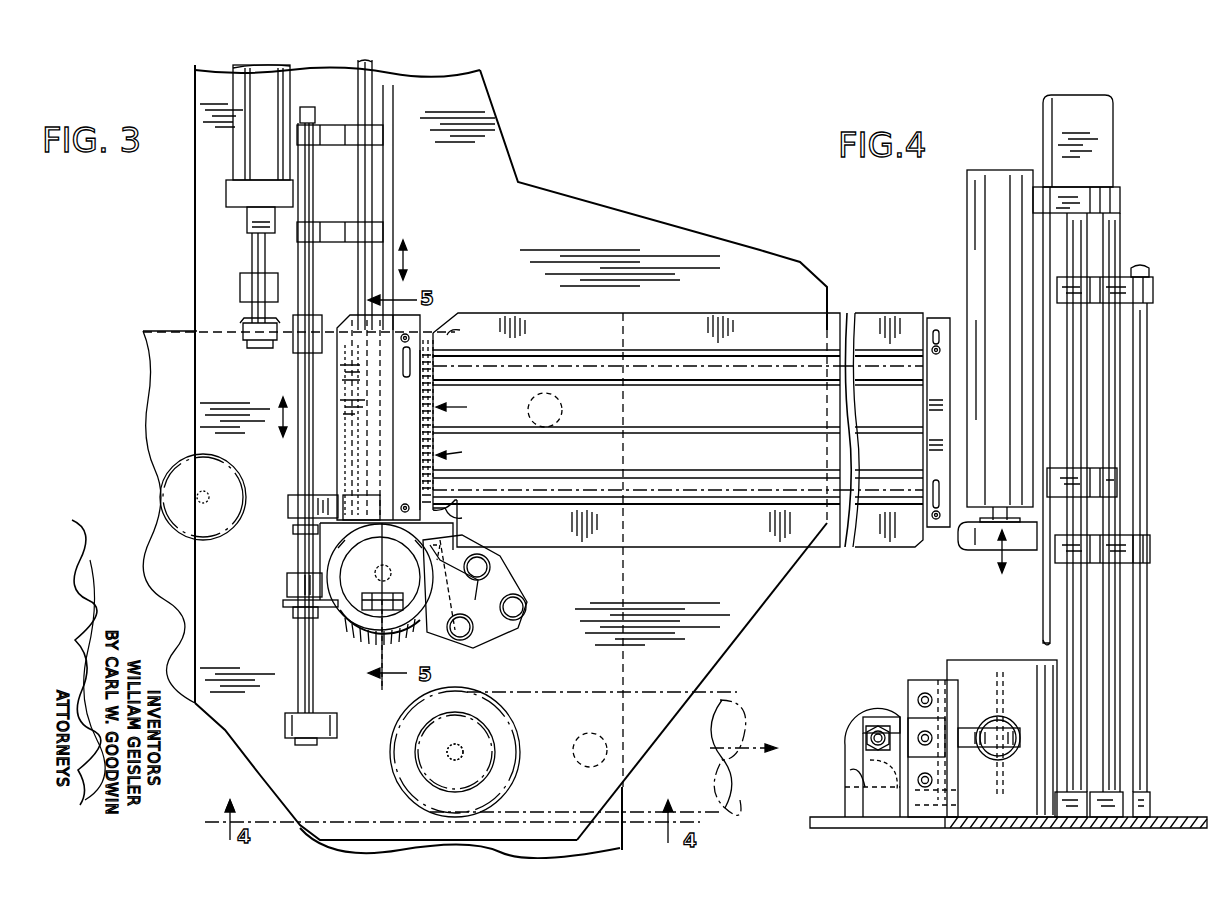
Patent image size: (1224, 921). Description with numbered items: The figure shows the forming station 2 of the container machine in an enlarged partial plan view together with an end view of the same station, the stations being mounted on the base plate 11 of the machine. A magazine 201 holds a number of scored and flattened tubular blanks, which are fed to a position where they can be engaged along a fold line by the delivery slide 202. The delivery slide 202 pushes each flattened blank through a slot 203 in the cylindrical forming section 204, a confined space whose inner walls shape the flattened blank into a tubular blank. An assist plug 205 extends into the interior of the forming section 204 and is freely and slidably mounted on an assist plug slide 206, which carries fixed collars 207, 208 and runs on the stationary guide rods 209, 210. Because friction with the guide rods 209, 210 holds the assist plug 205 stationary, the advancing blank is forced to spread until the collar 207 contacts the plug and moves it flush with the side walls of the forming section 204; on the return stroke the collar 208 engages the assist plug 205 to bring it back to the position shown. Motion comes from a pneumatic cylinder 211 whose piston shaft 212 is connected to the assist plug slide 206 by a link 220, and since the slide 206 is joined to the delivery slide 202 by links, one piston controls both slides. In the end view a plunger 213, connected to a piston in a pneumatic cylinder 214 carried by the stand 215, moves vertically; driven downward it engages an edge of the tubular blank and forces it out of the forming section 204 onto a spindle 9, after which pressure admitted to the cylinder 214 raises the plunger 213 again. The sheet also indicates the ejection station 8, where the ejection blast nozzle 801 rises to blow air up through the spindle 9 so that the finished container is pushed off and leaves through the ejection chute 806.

In FIG. 3, the forming station 2 is at (600, 180).
In FIG. 4, the forming station 2 is at (1153, 628).
In FIG. 3, the ejection station 8 is at (378, 769).
In FIG. 3, the spindle 9 is at (170, 480).
In FIG. 3, the base plate 11 is at (168, 364).
In FIG. 3, the magazine 201 is at (668, 343).
In FIG. 3, the delivery slide 202 is at (387, 210).
In FIG. 3, the slot 203 is at (380, 584).
In FIG. 4, the slot 203 is at (1006, 724).
In FIG. 3, the cylindrical forming section 204 is at (337, 617).
In FIG. 4, the cylindrical forming section 204 is at (999, 646).
In FIG. 3, the assist plug 205 is at (368, 594).
In FIG. 4, the assist plug 205 is at (1030, 720).
In FIG. 3, the assist plug slide 206 is at (305, 462).
In FIG. 4, the assist plug slide 206 is at (920, 732).
In FIG. 3, the collar 207 is at (293, 528).
In FIG. 3, the collar 208 is at (290, 608).
In FIG. 3, the stationary guide rod 209 is at (303, 665).
In FIG. 4, the stationary guide rod 209 is at (925, 693).
In FIG. 4, the stationary guide rod 210 is at (918, 786).
In FIG. 3, the pneumatic cylinder 211 is at (260, 140).
In FIG. 4, the pneumatic cylinder 211 is at (855, 722).
In FIG. 3, the piston shaft 212 is at (258, 253).
In FIG. 4, the piston shaft 212 is at (872, 738).
In FIG. 4, the plunger 213 is at (985, 545).
In FIG. 4, the pneumatic cylinder 214 is at (990, 238).
In FIG. 3, the stand 215 is at (495, 588).
In FIG. 4, the stand 215 is at (1097, 160).
In FIG. 3, the link 220 is at (288, 350).
In FIG. 4, the link 220 is at (895, 760).
In FIG. 3, the ejection blast nozzle 801 is at (448, 750).
In FIG. 3, the ejection chute 806 is at (724, 702).